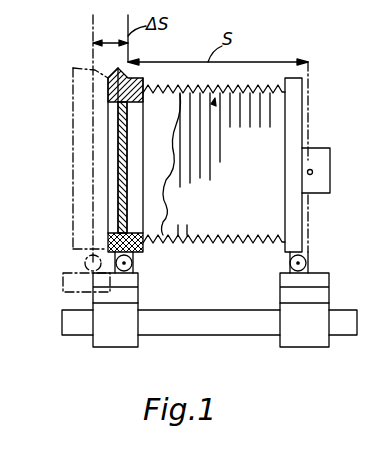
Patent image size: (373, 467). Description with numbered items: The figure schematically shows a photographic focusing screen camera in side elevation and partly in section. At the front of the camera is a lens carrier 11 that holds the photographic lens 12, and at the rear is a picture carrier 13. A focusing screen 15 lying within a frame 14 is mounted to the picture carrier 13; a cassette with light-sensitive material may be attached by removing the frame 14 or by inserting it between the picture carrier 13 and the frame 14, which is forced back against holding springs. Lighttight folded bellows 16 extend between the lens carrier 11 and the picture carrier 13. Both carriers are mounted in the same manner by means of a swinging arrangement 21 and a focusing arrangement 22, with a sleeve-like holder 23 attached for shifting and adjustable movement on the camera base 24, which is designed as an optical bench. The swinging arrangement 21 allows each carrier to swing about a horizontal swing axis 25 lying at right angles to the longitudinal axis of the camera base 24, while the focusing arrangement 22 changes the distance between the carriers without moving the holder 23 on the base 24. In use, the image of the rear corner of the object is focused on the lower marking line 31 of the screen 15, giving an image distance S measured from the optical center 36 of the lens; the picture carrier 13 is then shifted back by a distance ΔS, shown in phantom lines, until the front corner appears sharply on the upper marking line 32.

The lens carrier 11 is at (293, 103).
The photographic lens 12 is at (322, 148).
The picture carrier 13 is at (140, 254).
The frame 14 is at (108, 237).
The focusing screen 15 is at (118, 148).
The folded bellows 16 is at (242, 245).
The swinging arrangement 21 is at (133, 266).
The focusing arrangement 22 is at (100, 281).
The sleeve-like holder 23 is at (112, 337).
The camera base 24 is at (236, 328).
The horizontal swing axis 25 is at (306, 258).
The lower marking line 31 is at (124, 215).
The upper marking line 32 is at (126, 127).
The optical center 36 is at (313, 172).